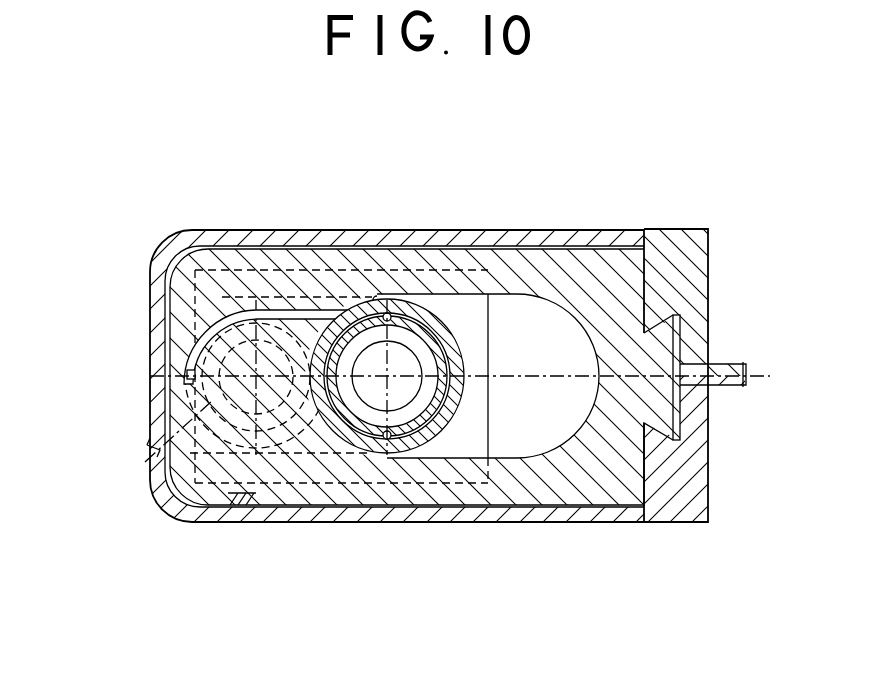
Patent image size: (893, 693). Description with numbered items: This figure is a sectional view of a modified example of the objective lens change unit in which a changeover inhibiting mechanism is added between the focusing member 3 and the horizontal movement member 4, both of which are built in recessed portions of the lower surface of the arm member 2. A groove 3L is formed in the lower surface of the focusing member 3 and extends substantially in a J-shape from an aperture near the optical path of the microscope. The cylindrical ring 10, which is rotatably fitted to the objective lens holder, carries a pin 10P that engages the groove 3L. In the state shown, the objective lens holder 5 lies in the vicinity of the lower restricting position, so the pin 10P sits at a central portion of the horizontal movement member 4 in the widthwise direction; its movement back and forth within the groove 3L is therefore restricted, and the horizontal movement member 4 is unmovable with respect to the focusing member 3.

The arm member 2 is at (661, 503).
The focusing member 3 is at (593, 267).
The groove 3L is at (314, 318).
The horizontal movement member 4 is at (470, 320).
The objective lens holder 5 is at (432, 280).
The ring 10 is at (268, 320).
The pin 10P is at (187, 375).